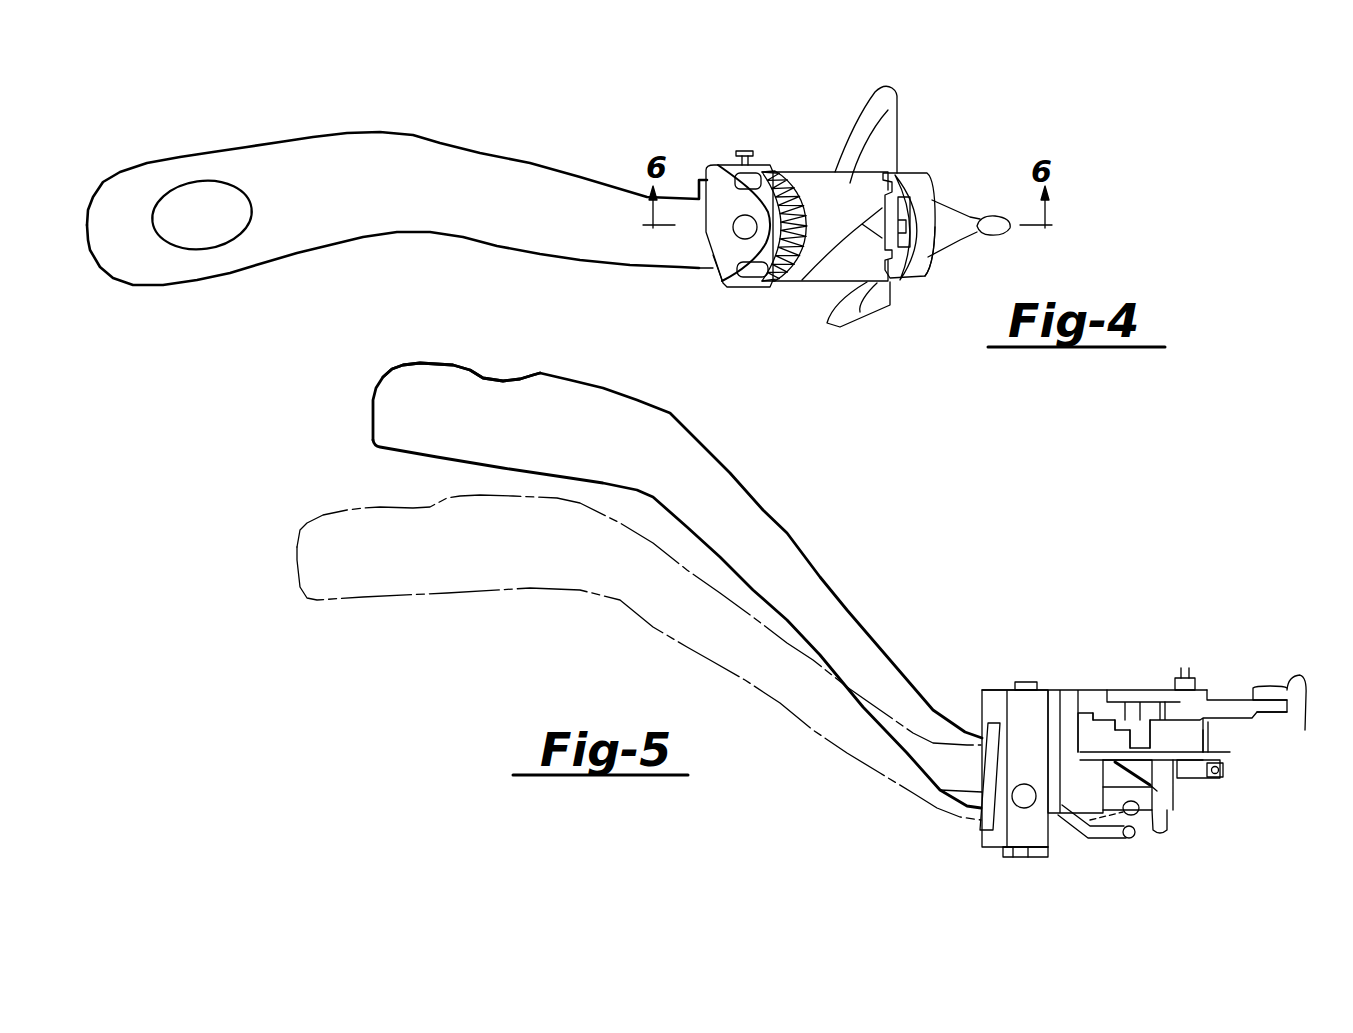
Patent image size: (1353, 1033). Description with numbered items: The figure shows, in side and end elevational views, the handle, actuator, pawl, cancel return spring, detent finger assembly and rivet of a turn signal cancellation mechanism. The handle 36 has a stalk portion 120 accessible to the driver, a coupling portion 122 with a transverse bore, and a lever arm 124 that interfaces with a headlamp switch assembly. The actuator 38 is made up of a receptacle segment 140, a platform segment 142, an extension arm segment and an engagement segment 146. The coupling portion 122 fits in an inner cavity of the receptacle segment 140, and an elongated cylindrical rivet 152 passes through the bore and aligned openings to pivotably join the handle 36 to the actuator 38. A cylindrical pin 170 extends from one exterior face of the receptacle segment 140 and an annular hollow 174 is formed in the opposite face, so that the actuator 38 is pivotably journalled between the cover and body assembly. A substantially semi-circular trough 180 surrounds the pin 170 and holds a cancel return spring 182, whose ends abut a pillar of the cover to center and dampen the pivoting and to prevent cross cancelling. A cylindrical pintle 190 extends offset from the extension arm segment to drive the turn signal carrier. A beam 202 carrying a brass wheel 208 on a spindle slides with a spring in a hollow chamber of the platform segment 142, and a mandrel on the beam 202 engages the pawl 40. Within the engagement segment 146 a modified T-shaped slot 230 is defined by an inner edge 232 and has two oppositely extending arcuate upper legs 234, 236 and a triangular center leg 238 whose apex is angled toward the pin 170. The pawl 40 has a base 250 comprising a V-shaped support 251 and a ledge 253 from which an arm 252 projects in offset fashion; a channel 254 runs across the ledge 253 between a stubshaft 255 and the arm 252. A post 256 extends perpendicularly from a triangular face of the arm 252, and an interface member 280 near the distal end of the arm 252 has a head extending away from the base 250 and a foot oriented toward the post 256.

In FIG. 4, the handle 36 is at (455, 195).
In FIG. 5, the handle 36 is at (763, 563).
In FIG. 4, the actuator 38 is at (822, 143).
In FIG. 5, the actuator 38 is at (1022, 861).
In FIG. 4, the pawl 40 is at (961, 255).
In FIG. 5, the pawl 40 is at (1243, 737).
In FIG. 4, the stalk portion 120 is at (300, 187).
In FIG. 5, the stalk portion 120 is at (608, 427).
In FIG. 4, the coupling portion 122 is at (700, 268).
In FIG. 5, the coupling portion 122 is at (940, 790).
In FIG. 5, the lever arm 124 is at (1130, 837).
In FIG. 4, the receptacle segment 140 is at (725, 250).
In FIG. 5, the receptacle segment 140 is at (997, 700).
In FIG. 5, the platform segment 142 is at (1175, 777).
In FIG. 4, the engagement segment 146 is at (897, 125).
In FIG. 5, the engagement segment 146 is at (1168, 690).
In FIG. 5, the rivet 152 is at (1000, 750).
In FIG. 4, the pin 170 is at (743, 218).
In FIG. 5, the pin 170 is at (1028, 680).
In FIG. 5, the annular hollow 174 is at (1010, 845).
In FIG. 4, the trough 180 is at (738, 187).
In FIG. 4, the cancel return spring 182 is at (770, 167).
In FIG. 5, the pintle 190 is at (1178, 805).
In FIG. 5, the beam 202 is at (1205, 780).
In FIG. 5, the wheel 208 is at (1222, 772).
In FIG. 4, the modified T-shaped slot 230 is at (902, 270).
In FIG. 4, the inner edge 232 is at (900, 185).
In FIG. 4, the upper leg 234 is at (897, 170).
In FIG. 4, the upper leg 236 is at (875, 310).
In FIG. 4, the center leg 238 is at (810, 272).
In FIG. 5, the base 250 is at (1213, 731).
In FIG. 5, the V-shaped support 251 is at (1162, 712).
In FIG. 5, the arm 252 is at (1225, 700).
In FIG. 5, the ledge 253 is at (1108, 722).
In FIG. 5, the channel 254 is at (1146, 712).
In FIG. 5, the stubshaft 255 is at (1132, 712).
In FIG. 4, the post 256 is at (942, 200).
In FIG. 5, the post 256 is at (1185, 677).
In FIG. 4, the interface member 280 is at (1010, 228).
In FIG. 5, the interface member 280 is at (1296, 712).